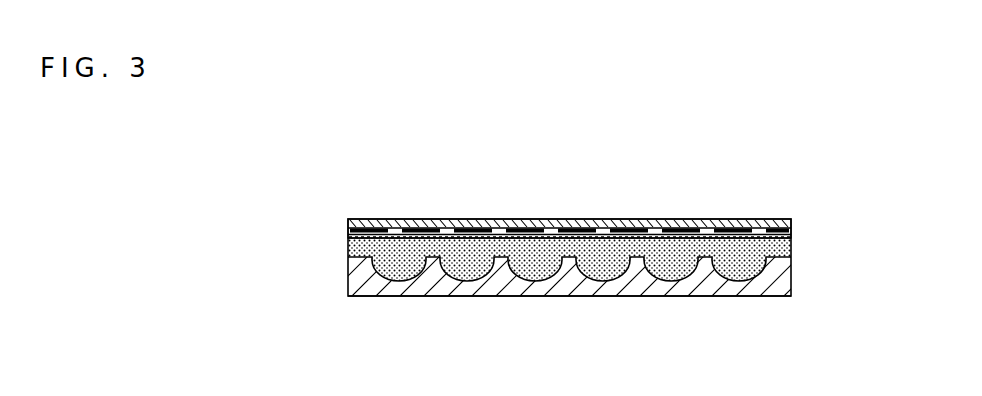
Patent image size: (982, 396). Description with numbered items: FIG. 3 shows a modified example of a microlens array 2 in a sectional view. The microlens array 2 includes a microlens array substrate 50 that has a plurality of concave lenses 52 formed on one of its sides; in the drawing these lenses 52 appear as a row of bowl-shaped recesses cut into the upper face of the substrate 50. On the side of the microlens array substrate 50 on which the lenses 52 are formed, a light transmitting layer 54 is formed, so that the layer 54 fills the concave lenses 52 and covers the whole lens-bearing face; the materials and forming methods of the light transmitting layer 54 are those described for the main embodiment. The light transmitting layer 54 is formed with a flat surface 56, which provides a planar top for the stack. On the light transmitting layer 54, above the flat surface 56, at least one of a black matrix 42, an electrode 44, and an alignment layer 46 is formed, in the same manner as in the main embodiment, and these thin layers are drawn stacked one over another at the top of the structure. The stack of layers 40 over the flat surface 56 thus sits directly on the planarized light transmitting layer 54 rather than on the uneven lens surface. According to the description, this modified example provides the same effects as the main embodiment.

The microlens array 2 is at (515, 196).
The display panel 40 is at (794, 237).
The black matrix 42 is at (636, 220).
The electrode 44 is at (681, 220).
The alignment layer 46 is at (740, 220).
The flat surface 56 is at (756, 218).
The light transmitting layer 54 is at (795, 254).
The concave lenses 52 is at (761, 297).
The microlens array substrate 50 is at (795, 293).